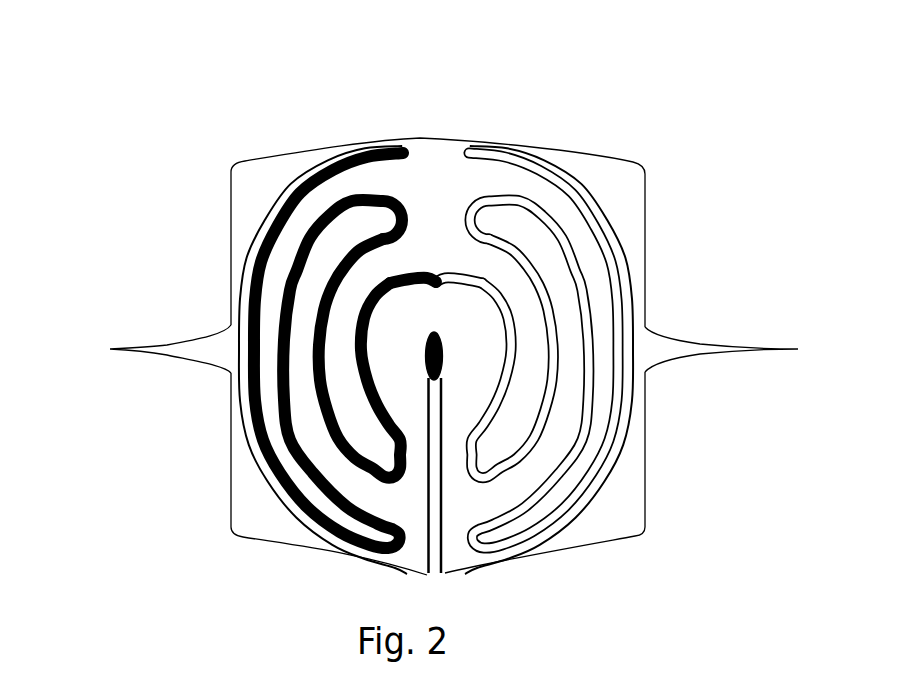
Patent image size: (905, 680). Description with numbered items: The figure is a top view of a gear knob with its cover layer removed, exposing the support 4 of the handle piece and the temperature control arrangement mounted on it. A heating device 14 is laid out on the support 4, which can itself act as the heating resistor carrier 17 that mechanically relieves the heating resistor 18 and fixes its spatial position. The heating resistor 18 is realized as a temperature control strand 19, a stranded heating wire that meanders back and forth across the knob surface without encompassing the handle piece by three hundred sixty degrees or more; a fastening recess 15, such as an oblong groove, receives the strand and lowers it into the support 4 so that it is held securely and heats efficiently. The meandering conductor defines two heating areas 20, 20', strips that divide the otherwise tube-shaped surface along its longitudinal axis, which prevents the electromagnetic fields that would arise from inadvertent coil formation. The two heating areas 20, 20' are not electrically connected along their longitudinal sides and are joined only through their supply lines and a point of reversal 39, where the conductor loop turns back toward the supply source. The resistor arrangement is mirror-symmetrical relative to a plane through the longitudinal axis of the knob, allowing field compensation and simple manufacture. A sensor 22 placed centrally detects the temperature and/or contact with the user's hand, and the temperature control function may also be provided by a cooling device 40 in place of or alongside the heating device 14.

The support 4 is at (423, 187).
The heating device 14 is at (559, 283).
The fastening recess 15 is at (480, 433).
The heating resistor carrier 17 is at (383, 281).
The heating resistor 18 is at (559, 283).
The temperature control strand 19 is at (559, 283).
The heating area 20 is at (126, 349).
The heating area 20' is at (753, 349).
The sensor 22 is at (444, 365).
The point of reversal 39 is at (433, 273).
The cooling device 40 is at (365, 349).